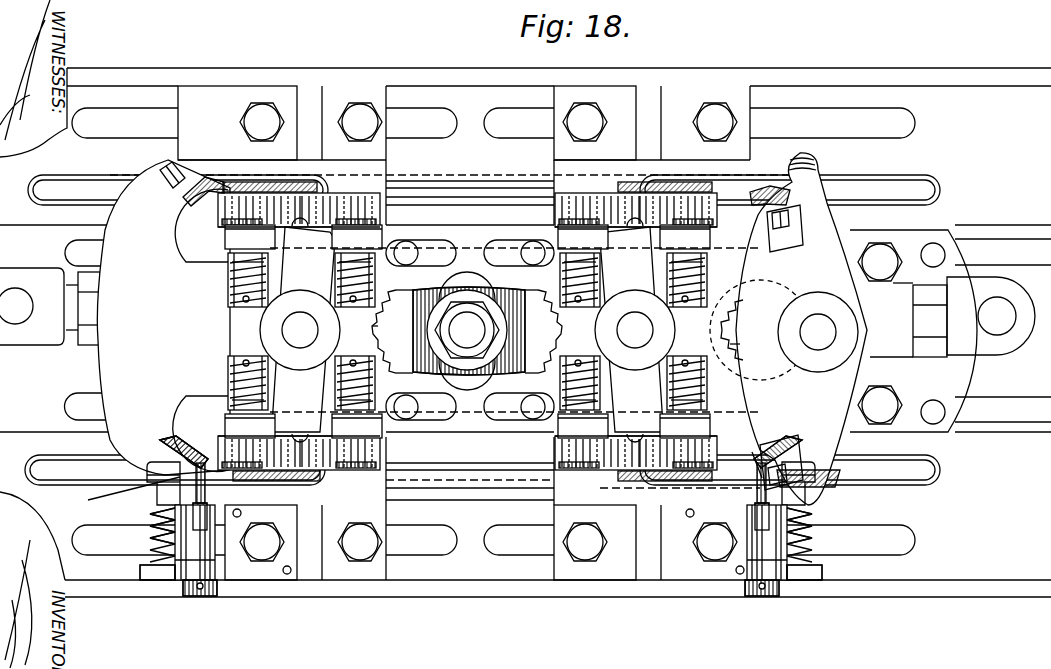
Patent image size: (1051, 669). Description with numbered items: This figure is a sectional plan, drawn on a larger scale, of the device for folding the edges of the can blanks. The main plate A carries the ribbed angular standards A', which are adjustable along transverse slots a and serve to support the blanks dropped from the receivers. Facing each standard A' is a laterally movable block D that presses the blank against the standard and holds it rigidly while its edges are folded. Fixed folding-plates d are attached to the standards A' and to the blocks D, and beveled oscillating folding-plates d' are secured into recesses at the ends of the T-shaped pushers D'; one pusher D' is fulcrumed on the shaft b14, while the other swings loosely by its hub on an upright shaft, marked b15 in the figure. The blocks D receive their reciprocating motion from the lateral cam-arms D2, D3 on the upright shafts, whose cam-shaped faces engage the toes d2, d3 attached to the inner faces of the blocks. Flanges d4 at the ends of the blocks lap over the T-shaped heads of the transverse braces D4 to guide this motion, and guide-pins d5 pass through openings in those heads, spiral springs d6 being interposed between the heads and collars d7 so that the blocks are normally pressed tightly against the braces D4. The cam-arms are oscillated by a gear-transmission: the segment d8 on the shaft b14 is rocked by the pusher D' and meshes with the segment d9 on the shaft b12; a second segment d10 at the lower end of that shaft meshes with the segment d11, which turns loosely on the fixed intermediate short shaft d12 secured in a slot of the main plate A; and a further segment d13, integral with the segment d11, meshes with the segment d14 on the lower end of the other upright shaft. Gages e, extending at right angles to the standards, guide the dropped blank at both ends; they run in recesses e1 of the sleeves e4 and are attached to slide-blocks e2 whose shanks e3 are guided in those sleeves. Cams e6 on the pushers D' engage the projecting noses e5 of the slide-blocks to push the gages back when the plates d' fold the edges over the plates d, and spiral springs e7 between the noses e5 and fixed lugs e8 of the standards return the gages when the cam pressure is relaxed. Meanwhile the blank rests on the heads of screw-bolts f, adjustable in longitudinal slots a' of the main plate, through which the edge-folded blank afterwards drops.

The main plate A is at (525, 332).
The ribbed angular standards A' is at (464, 333).
The transverse slots a is at (493, 331).
The longitudinal slots a' is at (482, 330).
The T-shaped pushers D' is at (482, 329).
The laterally-movable blocks D is at (467, 331).
The lateral cam-arm D2 is at (303, 330).
The lateral cam-arm D3 is at (631, 330).
The transverse braces D4 is at (473, 331).
The fixed folding-plates d is at (467, 334).
The oscillating folding-plates d' is at (490, 333).
The toe d2 is at (296, 331).
The toe d3 is at (649, 331).
The flanges d4 is at (475, 331).
The guide-pins d5 is at (451, 330).
The spiral springs d6 is at (452, 334).
The collars d7 is at (448, 330).
The segment d8 is at (746, 343).
The segment d9 is at (542, 331).
The segment d10 is at (565, 331).
The segment d11 is at (524, 331).
The intermediate short shaft d12 is at (469, 331).
The segment d13 is at (419, 331).
The segment d14 is at (367, 328).
The pivot b15 is at (300, 330).
The shaft b12 is at (635, 330).
The shaft b14 is at (818, 332).
The gages e is at (481, 516).
The recesses e1 is at (479, 523).
The slide-blocks e2 is at (163, 497).
The shanks e3 is at (198, 588).
The sleeves e4 is at (212, 566).
The projecting noses e5 is at (160, 477).
The cams e6 is at (499, 333).
The spiral springs e7 is at (484, 529).
The fixed lugs e8 is at (483, 570).
The screw-bolts f is at (418, 473).